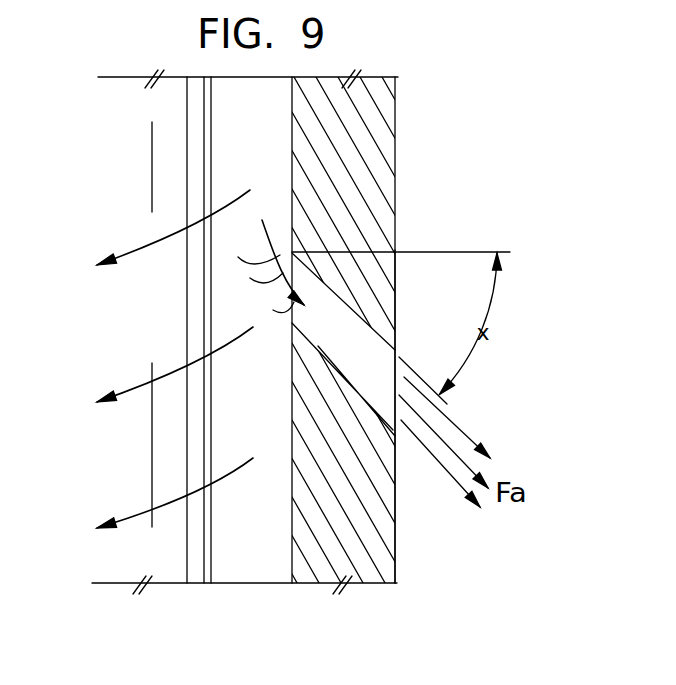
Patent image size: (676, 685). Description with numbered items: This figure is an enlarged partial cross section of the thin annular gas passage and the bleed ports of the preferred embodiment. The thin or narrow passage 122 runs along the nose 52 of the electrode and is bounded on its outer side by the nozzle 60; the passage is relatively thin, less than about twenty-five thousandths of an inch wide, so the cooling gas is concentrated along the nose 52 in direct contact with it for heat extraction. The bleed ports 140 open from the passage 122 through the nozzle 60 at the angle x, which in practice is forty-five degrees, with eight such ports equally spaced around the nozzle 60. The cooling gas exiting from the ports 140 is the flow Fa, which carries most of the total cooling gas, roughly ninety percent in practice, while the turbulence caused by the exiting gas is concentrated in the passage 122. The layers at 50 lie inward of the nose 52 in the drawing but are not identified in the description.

The thin annular passage 122 is at (272, 142).
The bleed ports 140 is at (343, 332).
The nose 52 is at (197, 422).
The coating layer 50 is at (205, 557).
The nozzle 60 is at (397, 530).